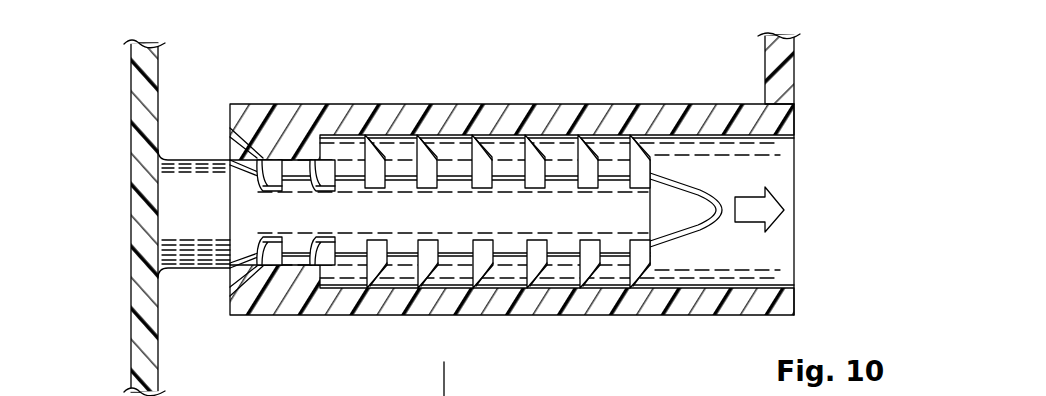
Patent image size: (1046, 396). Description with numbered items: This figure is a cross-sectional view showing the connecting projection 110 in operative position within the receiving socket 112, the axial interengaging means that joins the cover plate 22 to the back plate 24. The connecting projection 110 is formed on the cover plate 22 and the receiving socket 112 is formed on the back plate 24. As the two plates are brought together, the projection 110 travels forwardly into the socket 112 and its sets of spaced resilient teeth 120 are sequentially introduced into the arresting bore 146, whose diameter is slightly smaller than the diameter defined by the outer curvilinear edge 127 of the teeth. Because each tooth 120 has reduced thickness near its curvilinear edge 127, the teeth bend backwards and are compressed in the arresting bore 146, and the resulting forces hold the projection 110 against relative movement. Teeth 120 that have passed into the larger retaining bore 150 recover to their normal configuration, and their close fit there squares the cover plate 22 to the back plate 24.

The cover plate 22 is at (140, 83).
The back plate 24 is at (790, 60).
The connecting projection 110 is at (677, 270).
The receiving socket 112 is at (393, 100).
The spaced resilient teeth 120 is at (313, 267).
The curvilinear edge 127 is at (536, 286).
The arresting bore 146 is at (311, 158).
The retaining bore 150 is at (565, 133).